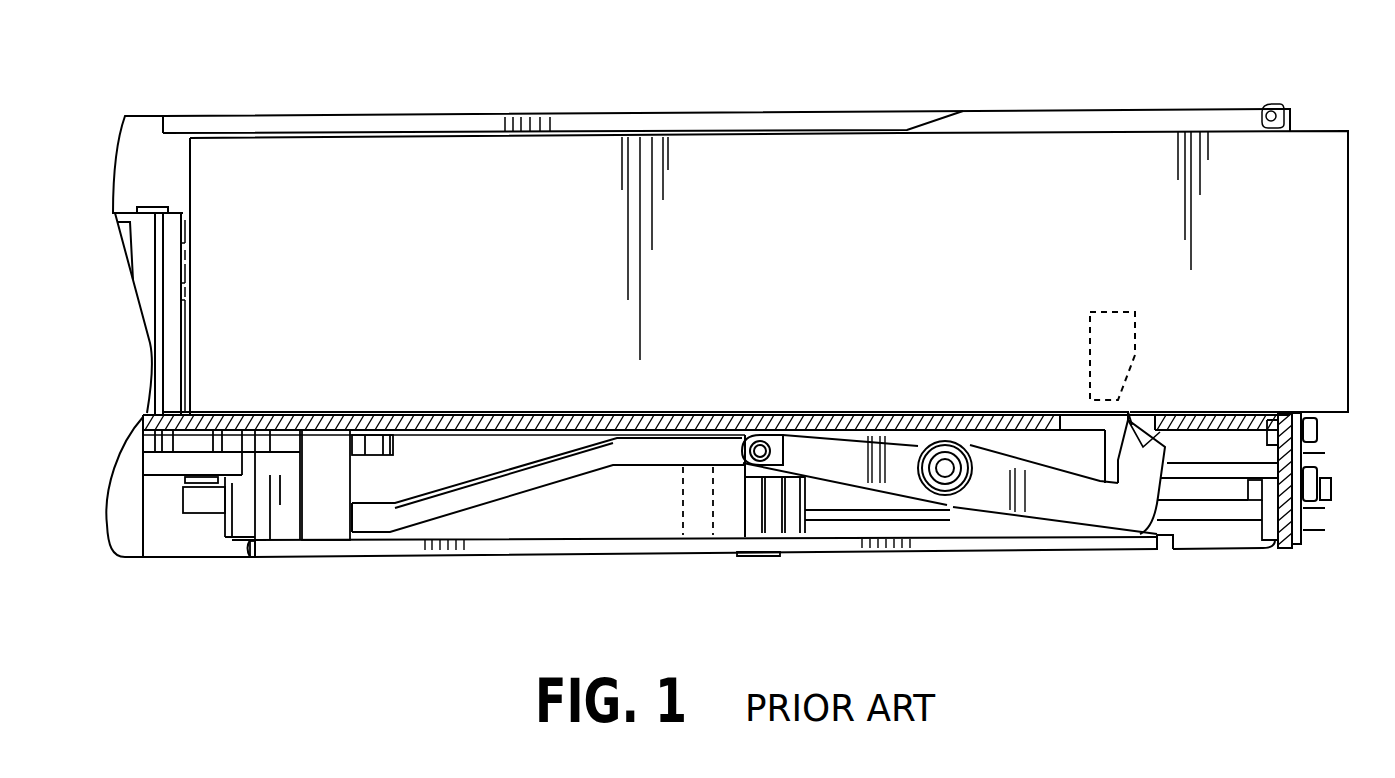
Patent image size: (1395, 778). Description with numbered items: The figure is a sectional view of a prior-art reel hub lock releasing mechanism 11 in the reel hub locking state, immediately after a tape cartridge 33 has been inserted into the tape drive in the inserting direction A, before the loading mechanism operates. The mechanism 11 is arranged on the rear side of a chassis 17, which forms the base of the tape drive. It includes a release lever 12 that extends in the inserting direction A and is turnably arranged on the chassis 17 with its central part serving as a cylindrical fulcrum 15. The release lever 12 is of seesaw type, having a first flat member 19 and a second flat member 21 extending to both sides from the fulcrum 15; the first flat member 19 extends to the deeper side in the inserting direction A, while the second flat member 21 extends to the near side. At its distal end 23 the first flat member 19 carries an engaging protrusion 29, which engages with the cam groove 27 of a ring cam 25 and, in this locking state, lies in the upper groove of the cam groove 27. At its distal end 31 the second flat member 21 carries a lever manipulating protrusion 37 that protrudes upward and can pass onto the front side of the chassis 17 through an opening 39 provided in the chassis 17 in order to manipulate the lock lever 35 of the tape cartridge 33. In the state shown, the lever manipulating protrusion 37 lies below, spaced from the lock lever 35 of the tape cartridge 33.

The inserting direction A is at (1352, 282).
The reel hub lock releasing mechanism 11 is at (950, 505).
The release lever 12 is at (1160, 495).
The fulcrum 15 is at (957, 482).
The chassis 17 is at (455, 415).
The first flat member 19 is at (822, 470).
The second flat member 21 is at (1060, 505).
The distal end 23 is at (757, 470).
The ring cam 25 is at (672, 490).
The cam groove 27 is at (530, 470).
The engaging protrusion 29 is at (742, 414).
The distal end 31 is at (1120, 500).
The tape cartridge 33 is at (1045, 165).
The lock lever 35 is at (1095, 310).
The lever manipulating protrusion 37 is at (1165, 425).
The opening 39 is at (1085, 412).